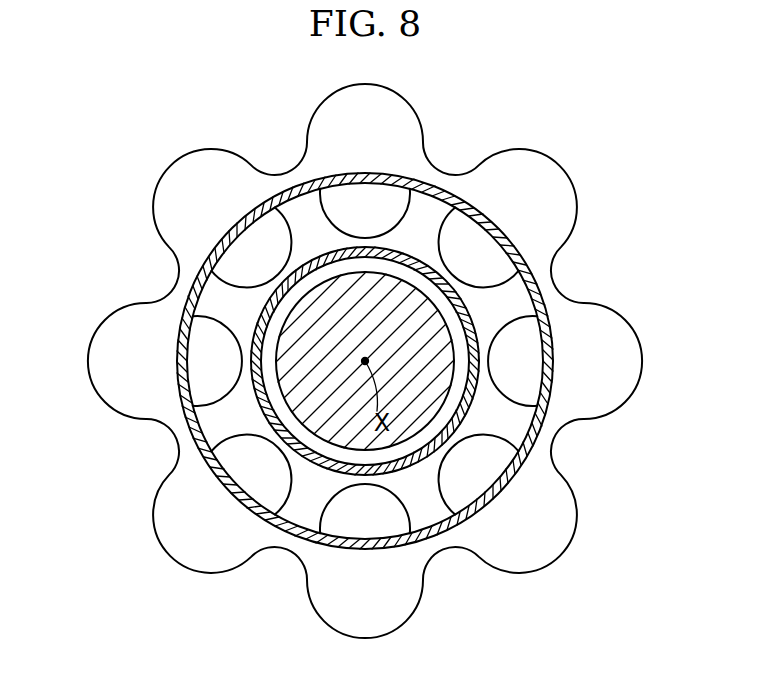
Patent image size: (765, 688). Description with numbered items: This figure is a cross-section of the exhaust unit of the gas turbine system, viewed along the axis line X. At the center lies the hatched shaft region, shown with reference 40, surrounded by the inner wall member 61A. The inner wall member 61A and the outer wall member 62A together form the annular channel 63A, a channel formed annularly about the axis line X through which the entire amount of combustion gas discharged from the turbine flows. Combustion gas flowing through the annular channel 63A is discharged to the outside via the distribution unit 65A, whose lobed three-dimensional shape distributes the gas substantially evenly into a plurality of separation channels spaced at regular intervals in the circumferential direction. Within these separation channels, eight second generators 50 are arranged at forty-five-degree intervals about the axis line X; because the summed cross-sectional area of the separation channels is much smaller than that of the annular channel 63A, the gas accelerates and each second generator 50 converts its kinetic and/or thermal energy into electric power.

The distribution unit 65A is at (168, 178).
The inner wall member 61A is at (313, 258).
The outer wall member 62A is at (453, 527).
The annular channel 63A is at (300, 525).
The second generator 50 is at (360, 193).
The shaft 40 is at (421, 427).